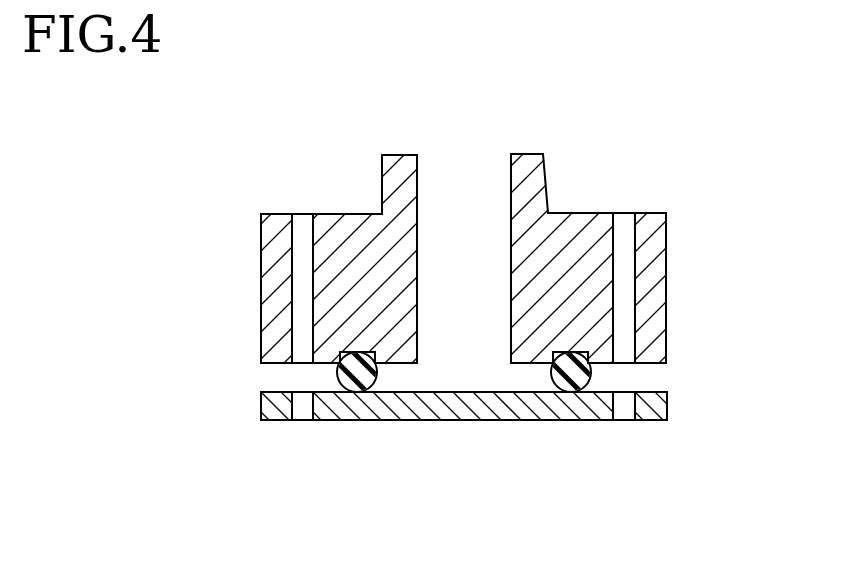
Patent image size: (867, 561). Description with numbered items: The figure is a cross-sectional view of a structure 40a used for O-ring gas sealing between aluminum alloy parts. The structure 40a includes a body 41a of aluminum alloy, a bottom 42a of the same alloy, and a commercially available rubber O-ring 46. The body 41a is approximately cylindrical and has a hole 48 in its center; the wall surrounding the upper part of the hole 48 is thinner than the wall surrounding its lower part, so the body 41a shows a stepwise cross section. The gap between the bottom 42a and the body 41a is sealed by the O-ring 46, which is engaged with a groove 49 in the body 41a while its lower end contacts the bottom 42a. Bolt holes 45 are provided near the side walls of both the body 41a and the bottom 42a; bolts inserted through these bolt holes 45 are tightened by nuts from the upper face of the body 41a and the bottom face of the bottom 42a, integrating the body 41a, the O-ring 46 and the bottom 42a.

The structure 40a is at (614, 168).
The body 41a is at (277, 214).
The bottom 42a is at (260, 405).
The bolt holes 45 is at (301, 225).
The O-ring 46 is at (338, 372).
The hole 48 is at (487, 170).
The groove 49 is at (348, 352).